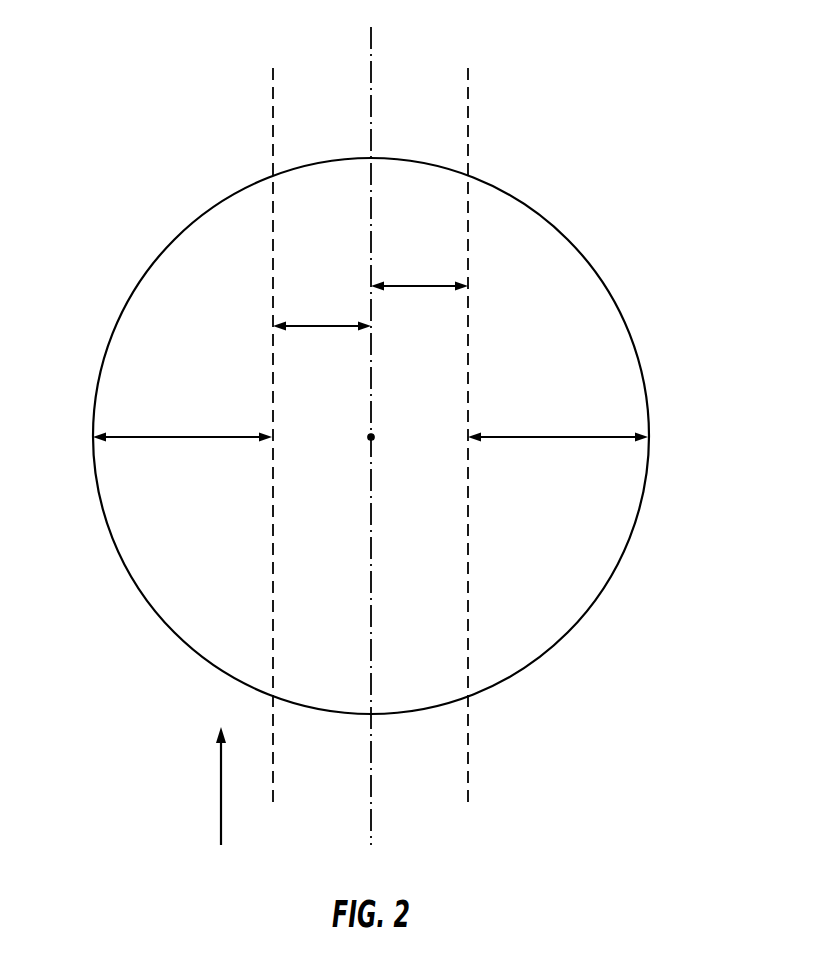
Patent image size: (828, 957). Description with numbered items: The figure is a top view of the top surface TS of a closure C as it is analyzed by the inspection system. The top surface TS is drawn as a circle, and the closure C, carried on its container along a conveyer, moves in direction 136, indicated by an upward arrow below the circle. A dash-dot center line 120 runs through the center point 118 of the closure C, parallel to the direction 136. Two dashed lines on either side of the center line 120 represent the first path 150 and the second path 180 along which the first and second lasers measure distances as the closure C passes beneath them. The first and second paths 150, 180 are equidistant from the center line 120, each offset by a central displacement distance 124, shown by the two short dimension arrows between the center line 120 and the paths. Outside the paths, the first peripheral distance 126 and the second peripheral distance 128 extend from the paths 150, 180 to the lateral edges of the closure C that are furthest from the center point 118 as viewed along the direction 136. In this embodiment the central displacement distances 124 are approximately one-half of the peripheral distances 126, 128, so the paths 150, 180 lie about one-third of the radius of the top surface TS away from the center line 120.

The center point 118 is at (374, 438).
The center line 120 is at (371, 50).
The central displacement distances 124 is at (320, 323).
The first peripheral distance 126 is at (127, 437).
The second peripheral distance 128 is at (614, 437).
The direction 136 is at (219, 800).
The first path 150 is at (273, 117).
The second path 180 is at (468, 117).
The closure C is at (177, 236).
The top surface TS is at (160, 323).